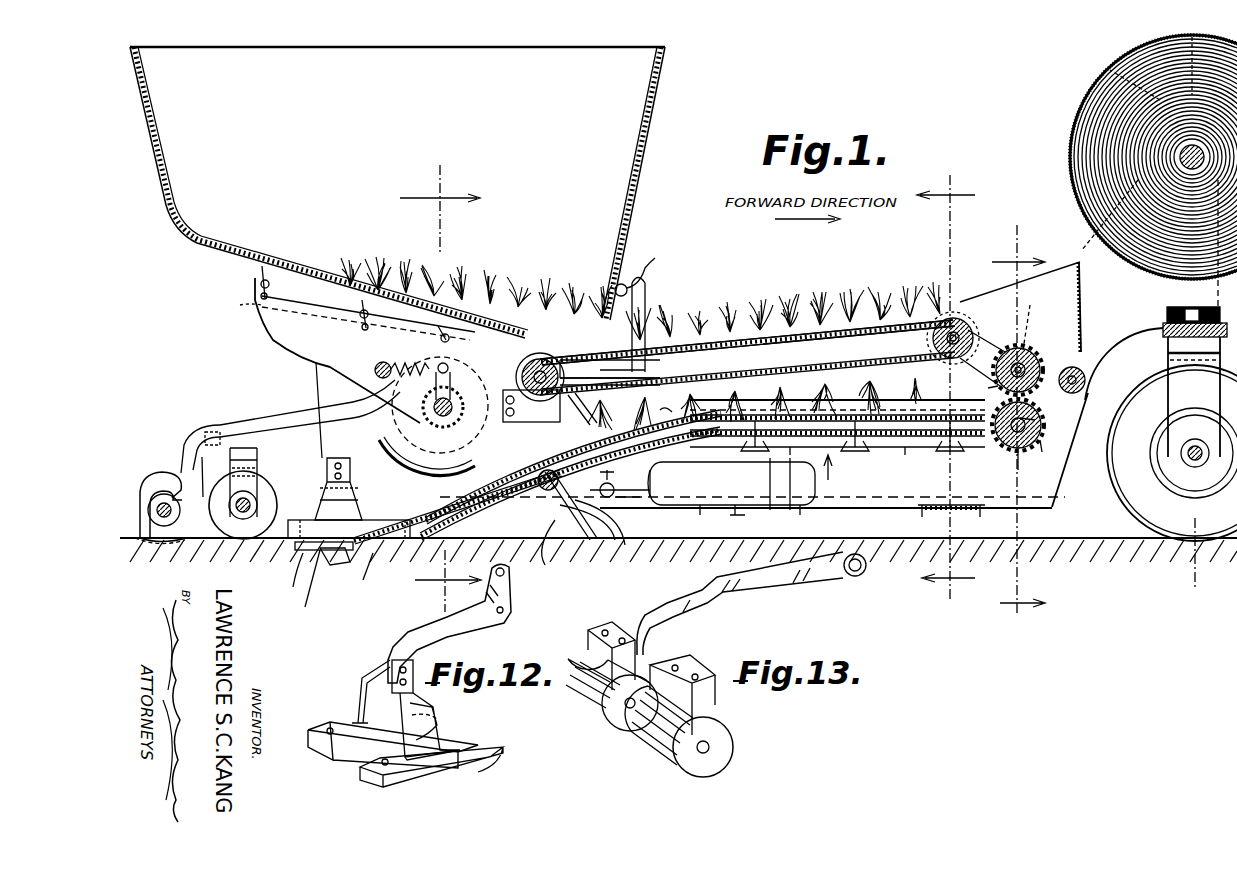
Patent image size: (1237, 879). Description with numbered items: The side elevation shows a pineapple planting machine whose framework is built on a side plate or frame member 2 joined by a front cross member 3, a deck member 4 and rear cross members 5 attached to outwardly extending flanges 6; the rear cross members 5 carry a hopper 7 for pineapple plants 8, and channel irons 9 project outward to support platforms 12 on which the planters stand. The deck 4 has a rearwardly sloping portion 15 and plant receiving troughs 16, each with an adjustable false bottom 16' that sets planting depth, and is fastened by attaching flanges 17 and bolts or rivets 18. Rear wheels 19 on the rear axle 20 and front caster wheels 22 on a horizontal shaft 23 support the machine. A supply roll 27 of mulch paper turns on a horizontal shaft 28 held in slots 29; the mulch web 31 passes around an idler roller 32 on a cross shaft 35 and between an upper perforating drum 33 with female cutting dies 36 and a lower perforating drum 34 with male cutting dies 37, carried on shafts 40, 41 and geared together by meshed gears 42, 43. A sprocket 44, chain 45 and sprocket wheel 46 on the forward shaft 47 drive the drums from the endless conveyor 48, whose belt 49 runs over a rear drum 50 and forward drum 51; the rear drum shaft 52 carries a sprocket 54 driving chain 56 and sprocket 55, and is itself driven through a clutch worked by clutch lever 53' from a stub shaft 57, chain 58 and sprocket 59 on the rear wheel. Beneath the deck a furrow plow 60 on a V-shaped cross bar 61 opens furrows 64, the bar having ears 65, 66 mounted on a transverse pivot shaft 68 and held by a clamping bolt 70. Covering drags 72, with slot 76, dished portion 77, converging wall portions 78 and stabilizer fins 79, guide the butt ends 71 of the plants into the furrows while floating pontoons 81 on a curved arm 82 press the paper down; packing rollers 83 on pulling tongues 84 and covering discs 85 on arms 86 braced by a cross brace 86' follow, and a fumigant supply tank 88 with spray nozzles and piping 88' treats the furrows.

In FIG. 1, the side plate or frame member 2 is at (1118, 315).
In FIG. 1, the front cross member 3 is at (1007, 420).
In FIG. 1, the deck member 4 is at (608, 388).
In FIG. 1, the rear cross members 5 is at (238, 270).
In FIG. 1, the outwardly extending flanges 6 is at (348, 319).
In FIG. 1, the hopper 7 is at (243, 163).
In FIG. 1, the pineapple plants 8 is at (362, 272).
In FIG. 1, the channel irons 9 is at (740, 510).
In FIG. 1, the platforms 12 is at (902, 495).
In FIG. 1, the rearwardly sloping portion 15 is at (455, 440).
In FIG. 1, the plant receiving troughs 16 is at (837, 414).
In FIG. 1, the plate or false bottom 16' is at (864, 413).
In FIG. 1, the attaching flanges 17 is at (915, 448).
In FIG. 1, the bolts or rivets 18 is at (872, 450).
In FIG. 1, the rear wheels 19 is at (306, 387).
In FIG. 1, the rear axle 20 is at (437, 420).
In FIG. 1, the front caster wheels 22 is at (1110, 496).
In FIG. 1, the horizontal shaft or axle 23 is at (1186, 456).
In FIG. 1, the supply roll 27 is at (1093, 93).
In FIG. 1, the horizontal shaft 28 is at (1182, 155).
In FIG. 1, the slots 29 is at (1128, 62).
In FIG. 1, the mulch web or sheet 31 is at (1072, 208).
In FIG. 1, the idler roller 32 is at (1070, 366).
In FIG. 1, the upper perforating drum 33 is at (1028, 350).
In FIG. 1, the lower perforating drum 34 is at (998, 442).
In FIG. 1, the cross shaft 35 is at (1087, 372).
In FIG. 1, the female cutting dies 36 is at (1020, 283).
In FIG. 1, the male cutting dies 37 is at (1033, 468).
In FIG. 1, the upper drum shaft 40 is at (977, 386).
In FIG. 1, the lower drum shaft 41 is at (1042, 420).
In FIG. 1, the gear 42 is at (1035, 360).
In FIG. 1, the gear 43 is at (1042, 452).
In FIG. 1, the sprocket 44 is at (1036, 322).
In FIG. 1, the chain 45 is at (990, 348).
In FIG. 1, the sprocket wheel 46 is at (935, 348).
In FIG. 1, the forward shaft 47 is at (950, 318).
In FIG. 1, the endless conveyor 48 is at (848, 300).
In FIG. 1, the endless belt 49 is at (718, 335).
In FIG. 1, the rear drum 50 is at (610, 368).
In FIG. 1, the forward drum 51 is at (958, 330).
In FIG. 1, the rotatable shaft 52 is at (581, 391).
In FIG. 1, the clutch lever 53' is at (648, 271).
In FIG. 1, the sprocket 54 is at (527, 368).
In FIG. 1, the sprocket 55 is at (940, 312).
In FIG. 1, the chain 56 is at (647, 315).
In FIG. 1, the stub shaft 57 is at (582, 409).
In FIG. 1, the chain 58 is at (517, 366).
In FIG. 1, the sprocket 59 is at (469, 402).
In FIG. 1, the furrow plow 60 is at (625, 500).
In FIG. 1, the V-shaped cross bar 61 is at (573, 467).
In FIG. 1, the furrows 64 is at (585, 545).
In FIG. 1, the ears 65 is at (550, 495).
In FIG. 1, the ears 66 is at (571, 481).
In FIG. 1, the transverse pivot shaft 68 is at (548, 540).
In FIG. 1, the clamping bolt 70 is at (637, 483).
In FIG. 1, the butt ends 71 is at (333, 575).
In FIG. 1, the covering drags 72 is at (506, 516).
In FIG. 1, the slot 76 is at (366, 581).
In FIG. 1, the dished portion 77 is at (414, 522).
In FIG. 1, the converging wall portions 78 is at (289, 574).
In FIG. 1, the stabilizer fins 79 is at (305, 588).
In FIG. 1, the floating pontoons 81 is at (312, 520).
In FIG. 12, the floating pontoons 81 is at (320, 730).
In FIG. 1, the curved arm 82 is at (327, 474).
In FIG. 12, the curved arm 82 is at (380, 648).
In FIG. 1, the packing rollers 83 is at (265, 495).
In FIG. 13, the packing rollers 83 is at (595, 715).
In FIG. 1, the pulling tongues 84 is at (262, 455).
In FIG. 13, the pulling tongues 84 is at (713, 628).
In FIG. 1, the covering discs 85 is at (160, 478).
In FIG. 1, the arms 86 is at (195, 445).
In FIG. 1, the cross brace 86' is at (227, 421).
In FIG. 1, the fumigant supply tank 88 is at (732, 486).
In FIG. 1, the spray nozzles and piping 88' is at (614, 496).